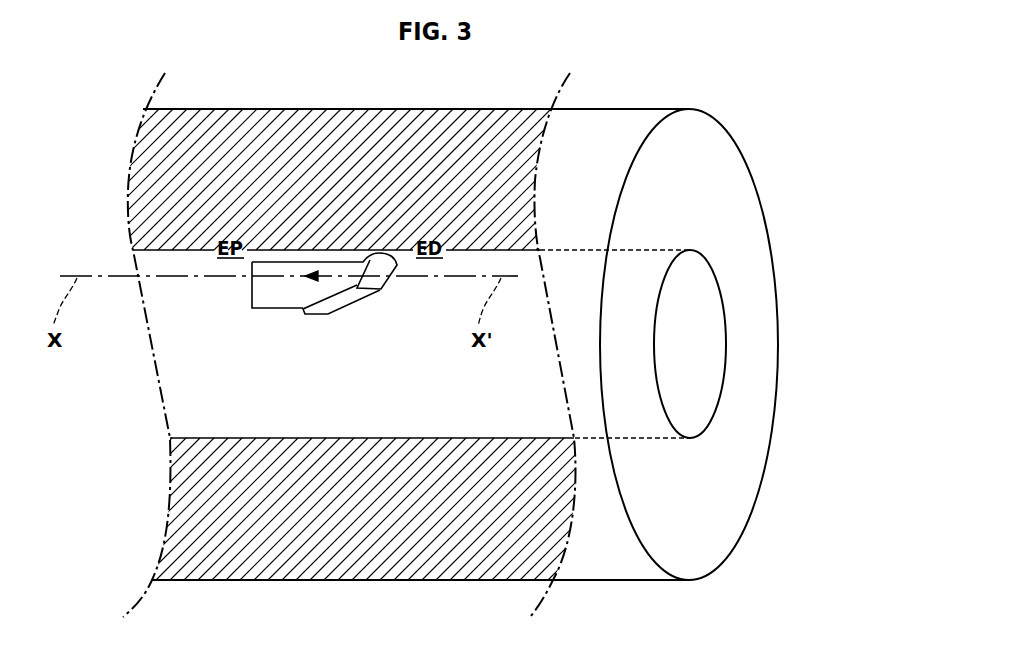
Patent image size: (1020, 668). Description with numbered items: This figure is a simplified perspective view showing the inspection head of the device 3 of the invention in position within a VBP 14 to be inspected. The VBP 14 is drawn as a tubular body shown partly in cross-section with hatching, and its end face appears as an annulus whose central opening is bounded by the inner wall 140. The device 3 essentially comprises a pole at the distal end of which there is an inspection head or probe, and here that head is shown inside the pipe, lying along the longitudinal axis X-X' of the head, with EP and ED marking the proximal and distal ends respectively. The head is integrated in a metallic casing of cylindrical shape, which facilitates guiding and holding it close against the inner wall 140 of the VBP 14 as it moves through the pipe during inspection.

The VBP 14 is at (773, 182).
The inner wall 140 is at (708, 275).
The device 3 is at (383, 352).